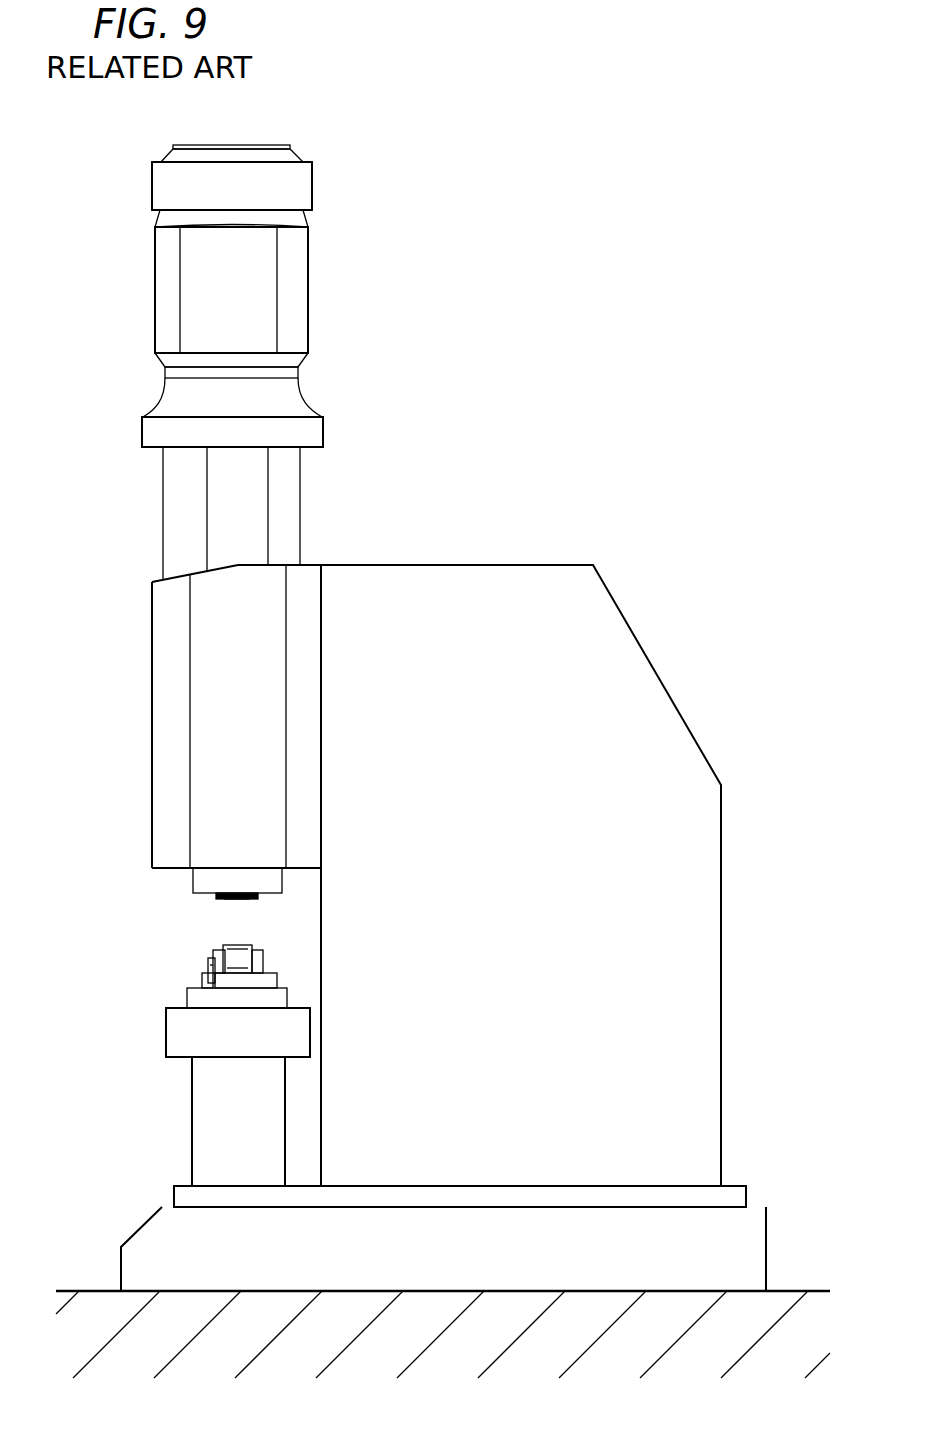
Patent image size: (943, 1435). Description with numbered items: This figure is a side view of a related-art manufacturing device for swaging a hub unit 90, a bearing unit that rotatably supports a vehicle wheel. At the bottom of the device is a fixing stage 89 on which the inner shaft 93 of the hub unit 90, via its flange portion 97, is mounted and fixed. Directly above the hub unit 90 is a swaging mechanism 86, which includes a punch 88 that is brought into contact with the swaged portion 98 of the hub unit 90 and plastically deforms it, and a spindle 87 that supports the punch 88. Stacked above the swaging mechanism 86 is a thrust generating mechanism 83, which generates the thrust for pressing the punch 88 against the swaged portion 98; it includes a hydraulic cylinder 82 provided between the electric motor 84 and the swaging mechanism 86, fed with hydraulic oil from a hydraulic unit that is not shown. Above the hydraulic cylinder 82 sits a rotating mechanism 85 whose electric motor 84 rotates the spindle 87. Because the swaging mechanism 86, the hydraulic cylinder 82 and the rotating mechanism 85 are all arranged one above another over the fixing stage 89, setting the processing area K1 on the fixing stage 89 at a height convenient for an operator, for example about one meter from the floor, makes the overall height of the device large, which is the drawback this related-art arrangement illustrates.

The hydraulic cylinder 82 is at (237, 717).
The thrust generating mechanism 83 is at (180, 695).
The electric motor 84 is at (305, 278).
The rotating mechanism 85 is at (307, 162).
The swaging mechanism 86 is at (287, 888).
The spindle 87 is at (248, 893).
The punch 88 is at (240, 900).
The fixing stage 89 is at (192, 978).
The hub unit 90 is at (265, 953).
The inner shaft 93 is at (232, 947).
The flange portion 97 is at (193, 975).
The swaged portion 98 is at (250, 950).
The processing area K1 is at (280, 970).